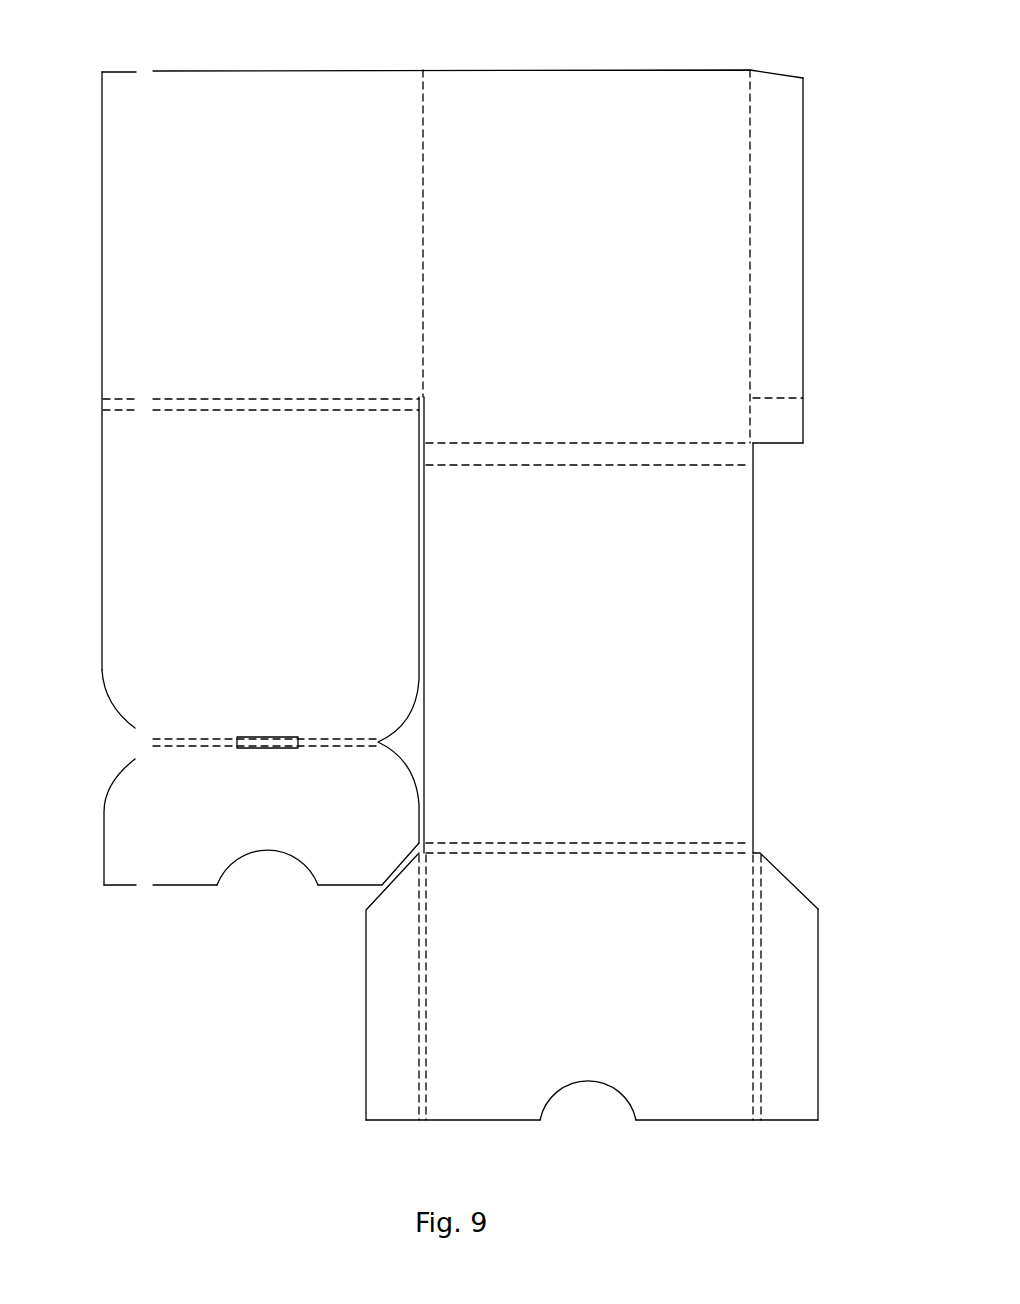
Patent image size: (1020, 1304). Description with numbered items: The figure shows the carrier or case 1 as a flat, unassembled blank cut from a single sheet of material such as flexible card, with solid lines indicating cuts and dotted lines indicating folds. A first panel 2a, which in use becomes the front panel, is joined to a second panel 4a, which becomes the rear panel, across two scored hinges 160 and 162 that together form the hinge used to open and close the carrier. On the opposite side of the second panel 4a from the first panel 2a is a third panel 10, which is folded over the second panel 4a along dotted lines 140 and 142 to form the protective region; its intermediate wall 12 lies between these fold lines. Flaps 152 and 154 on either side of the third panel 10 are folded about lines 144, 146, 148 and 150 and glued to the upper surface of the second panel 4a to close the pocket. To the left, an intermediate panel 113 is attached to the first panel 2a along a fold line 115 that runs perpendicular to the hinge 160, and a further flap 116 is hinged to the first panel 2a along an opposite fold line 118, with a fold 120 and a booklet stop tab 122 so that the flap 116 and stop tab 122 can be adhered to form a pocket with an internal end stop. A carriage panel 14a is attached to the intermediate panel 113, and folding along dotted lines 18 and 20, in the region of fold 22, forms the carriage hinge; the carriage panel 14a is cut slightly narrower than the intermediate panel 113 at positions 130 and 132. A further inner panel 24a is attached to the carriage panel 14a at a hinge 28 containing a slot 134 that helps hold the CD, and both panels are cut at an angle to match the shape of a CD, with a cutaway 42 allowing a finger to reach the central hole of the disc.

The blank 1 is at (472, 54).
The first panel 2a is at (642, 92).
The second panel 4a is at (730, 622).
The third panel 10 is at (481, 1088).
The intermediate wall 12 is at (541, 843).
The carriage panel 14a is at (116, 586).
The dotted line 18 is at (263, 411).
The dotted line 20 is at (303, 398).
The fold line 22 is at (322, 411).
The further panel 24a is at (123, 860).
The hinge 28 is at (180, 737).
The cutaway 42 is at (254, 852).
The intermediate panel 113 is at (133, 178).
The fold line 115 is at (424, 194).
The flap 116 is at (792, 218).
The fold line 118 is at (750, 172).
The fold line 120 is at (775, 397).
The booklet stop tab 122 is at (788, 423).
The position 130 is at (96, 398).
The position 132 is at (424, 396).
The slot 134 is at (278, 737).
The dotted line 140 is at (650, 843).
The dotted line 142 is at (595, 854).
The line 144 is at (762, 910).
The line 146 is at (753, 1093).
The line 148 is at (418, 1077).
The line 150 is at (427, 1097).
The flap 152 is at (378, 1022).
The flap 154 is at (792, 1035).
The hinge 160 is at (531, 467).
The hinge 162 is at (636, 449).